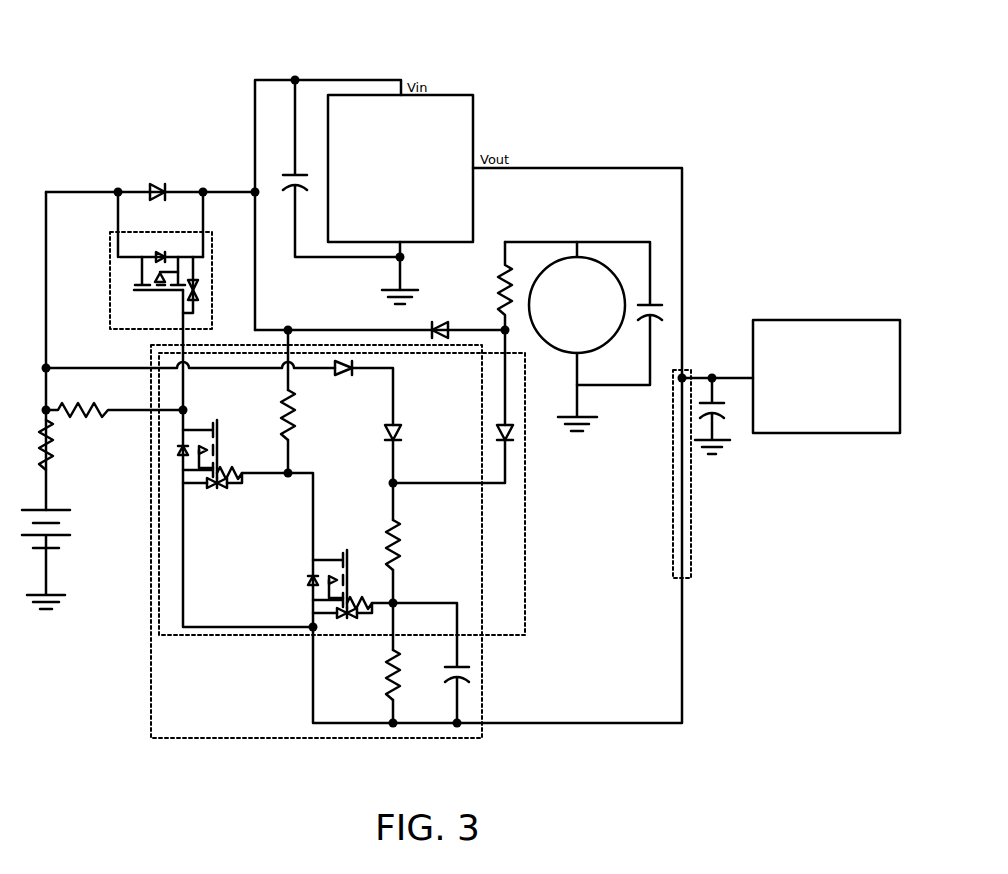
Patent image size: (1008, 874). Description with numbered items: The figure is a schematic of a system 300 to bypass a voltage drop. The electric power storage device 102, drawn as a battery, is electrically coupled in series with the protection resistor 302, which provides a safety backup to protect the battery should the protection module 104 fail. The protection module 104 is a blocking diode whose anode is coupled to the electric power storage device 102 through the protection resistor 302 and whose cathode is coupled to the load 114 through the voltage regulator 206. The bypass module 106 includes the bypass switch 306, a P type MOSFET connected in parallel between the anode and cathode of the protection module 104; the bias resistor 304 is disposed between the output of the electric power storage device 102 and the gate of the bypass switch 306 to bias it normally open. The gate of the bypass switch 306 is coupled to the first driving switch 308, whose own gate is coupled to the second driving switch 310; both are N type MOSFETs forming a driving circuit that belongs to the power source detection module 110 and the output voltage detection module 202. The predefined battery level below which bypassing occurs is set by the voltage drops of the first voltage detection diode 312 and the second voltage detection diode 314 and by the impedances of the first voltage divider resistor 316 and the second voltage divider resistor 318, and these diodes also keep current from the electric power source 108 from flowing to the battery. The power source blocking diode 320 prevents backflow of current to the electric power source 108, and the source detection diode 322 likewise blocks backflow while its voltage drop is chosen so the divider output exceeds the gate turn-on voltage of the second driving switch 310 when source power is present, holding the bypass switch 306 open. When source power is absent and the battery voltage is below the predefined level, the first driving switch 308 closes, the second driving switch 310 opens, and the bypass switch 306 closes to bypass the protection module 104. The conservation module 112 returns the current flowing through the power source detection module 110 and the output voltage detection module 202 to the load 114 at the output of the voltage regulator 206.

The system to bypass a voltage drop 300 is at (132, 36).
The electric power storage device 102 is at (55, 508).
The protection module 104 is at (152, 188).
The bypass module 106 is at (140, 278).
The electric power source 108 is at (560, 316).
The power source detection module 110 is at (525, 526).
The conservation module 112 is at (672, 512).
The load 114 is at (809, 401).
The output voltage detection module 202 is at (150, 672).
The voltage regulator 206 is at (383, 204).
The protection resistor 302 is at (62, 450).
The bias resistor 304 is at (106, 416).
The bypass switch 306 is at (150, 292).
The first driving switch 308 is at (210, 428).
The second driving switch 310 is at (312, 562).
The first voltage detection diode 312 is at (338, 372).
The second voltage detection diode 314 is at (389, 424).
The first voltage divider resistor 316 is at (391, 524).
The second voltage divider resistor 318 is at (390, 664).
The power source blocking diode 320 is at (440, 326).
The source detection diode 322 is at (520, 424).